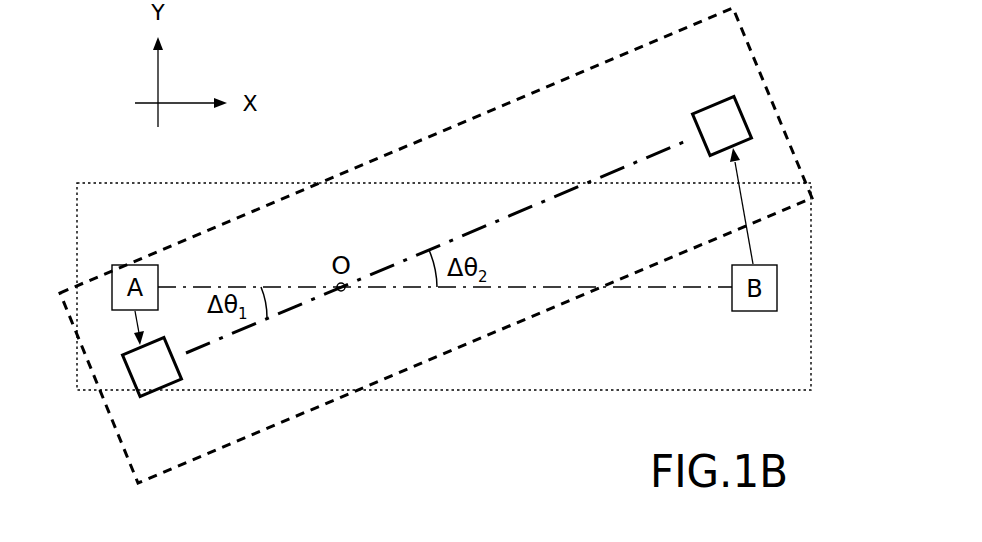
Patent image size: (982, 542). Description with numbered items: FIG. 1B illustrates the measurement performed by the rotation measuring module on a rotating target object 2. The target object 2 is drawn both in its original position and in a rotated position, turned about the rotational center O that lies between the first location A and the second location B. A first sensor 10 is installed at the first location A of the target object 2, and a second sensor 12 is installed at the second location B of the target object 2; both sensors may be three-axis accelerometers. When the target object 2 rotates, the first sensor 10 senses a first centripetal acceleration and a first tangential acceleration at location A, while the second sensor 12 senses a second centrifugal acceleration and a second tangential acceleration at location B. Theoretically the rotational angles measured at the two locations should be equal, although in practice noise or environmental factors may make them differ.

The target object 2 is at (555, 74).
The first sensor 10 is at (140, 395).
The second sensor 12 is at (733, 97).